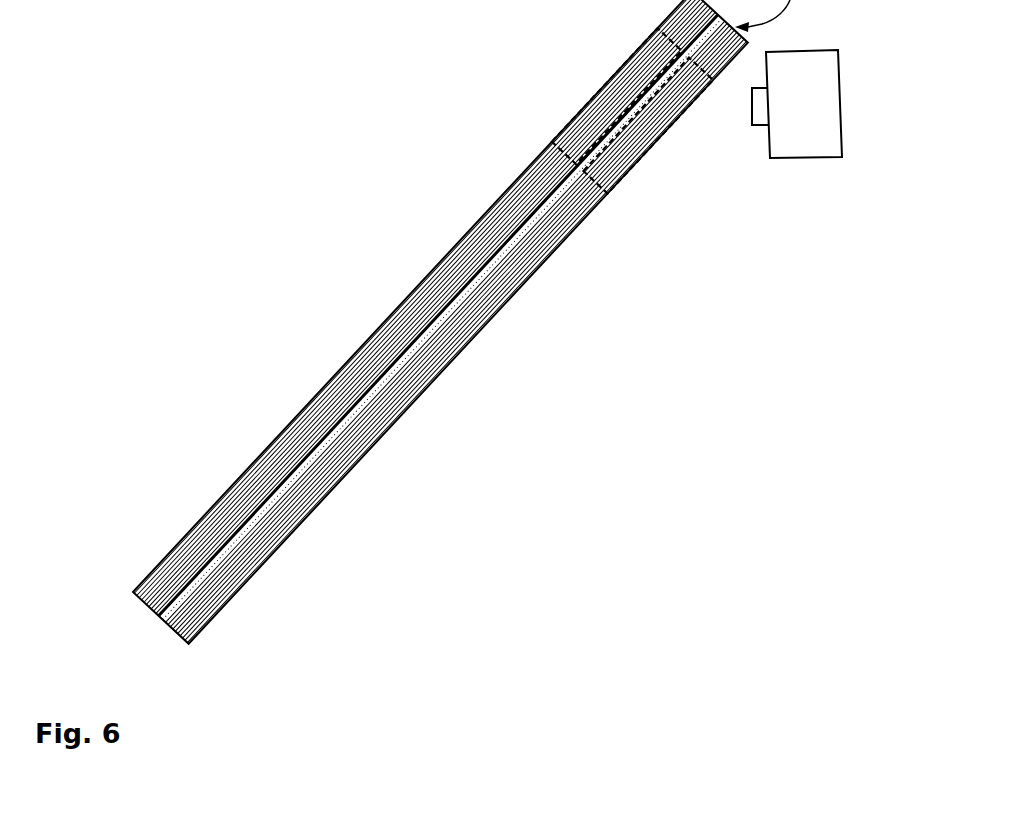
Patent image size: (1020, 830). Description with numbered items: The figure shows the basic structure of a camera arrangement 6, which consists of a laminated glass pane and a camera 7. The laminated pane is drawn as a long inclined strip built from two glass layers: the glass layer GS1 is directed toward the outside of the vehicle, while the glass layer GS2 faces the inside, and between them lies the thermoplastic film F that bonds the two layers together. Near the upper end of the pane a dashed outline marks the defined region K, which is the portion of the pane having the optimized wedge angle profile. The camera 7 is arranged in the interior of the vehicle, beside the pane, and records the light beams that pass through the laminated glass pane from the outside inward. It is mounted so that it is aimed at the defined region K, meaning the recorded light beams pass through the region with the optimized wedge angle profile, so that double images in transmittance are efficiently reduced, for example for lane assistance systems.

The camera arrangement 6 is at (384, 363).
The glass layer GS1 is at (152, 597).
The glass layer GS2 is at (178, 628).
The thermoplastic film F is at (160, 615).
The defined region K is at (612, 95).
The camera 7 is at (782, 127).